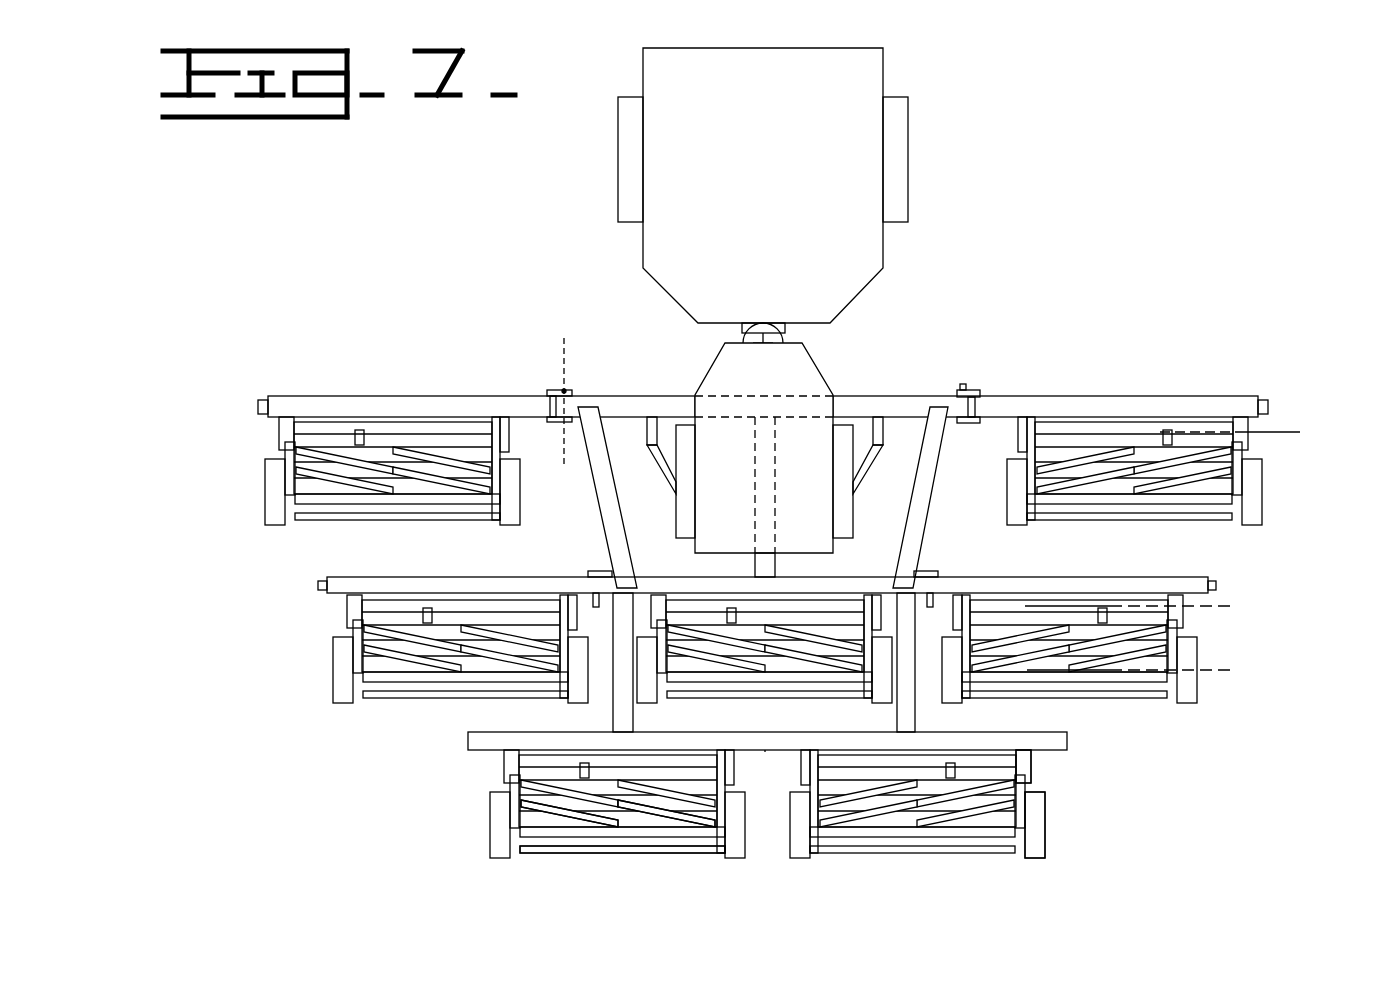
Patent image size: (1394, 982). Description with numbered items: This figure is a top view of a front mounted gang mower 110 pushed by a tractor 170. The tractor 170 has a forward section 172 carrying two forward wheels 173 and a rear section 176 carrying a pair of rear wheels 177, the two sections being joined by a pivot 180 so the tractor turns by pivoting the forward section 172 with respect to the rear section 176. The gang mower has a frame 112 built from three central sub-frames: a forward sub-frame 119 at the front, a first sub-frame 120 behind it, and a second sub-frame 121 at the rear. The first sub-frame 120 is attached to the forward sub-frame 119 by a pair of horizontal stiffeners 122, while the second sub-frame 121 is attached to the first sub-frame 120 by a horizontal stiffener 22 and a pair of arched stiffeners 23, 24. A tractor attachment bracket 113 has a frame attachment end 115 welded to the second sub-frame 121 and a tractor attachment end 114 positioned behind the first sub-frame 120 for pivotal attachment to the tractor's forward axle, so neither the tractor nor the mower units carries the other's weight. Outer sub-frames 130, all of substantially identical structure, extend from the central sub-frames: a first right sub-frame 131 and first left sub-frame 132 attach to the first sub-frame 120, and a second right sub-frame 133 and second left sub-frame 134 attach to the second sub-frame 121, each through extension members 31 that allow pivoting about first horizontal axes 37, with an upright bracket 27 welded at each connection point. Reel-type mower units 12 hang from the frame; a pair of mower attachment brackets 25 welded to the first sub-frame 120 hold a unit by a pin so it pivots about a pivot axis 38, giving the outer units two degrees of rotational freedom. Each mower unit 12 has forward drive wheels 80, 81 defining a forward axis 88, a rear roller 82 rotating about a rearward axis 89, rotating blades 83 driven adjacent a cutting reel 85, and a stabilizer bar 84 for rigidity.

The tractor 170 is at (790, 185).
The rear section 176 is at (643, 237).
The rear wheels 177 is at (908, 157).
The pivot 180 is at (785, 330).
The forward section 172 is at (830, 390).
The forward wheels 173 is at (853, 500).
The second sub-frame 121 is at (627, 397).
The frame attachment end 115 is at (645, 437).
The tractor attachment end 114 is at (676, 492).
The tractor attachment bracket 113 is at (883, 436).
The gang mower 110 is at (815, 423).
The frame 112 is at (763, 369).
The outer sub-frames 130 is at (1110, 397).
The second right sub-frame 133 is at (1202, 397).
The second left sub-frame 134 is at (300, 397).
The first left sub-frame 132 is at (360, 578).
The first right sub-frame 131 is at (1170, 578).
The first horizontal axes 37 is at (563, 390).
The extension members 31 is at (980, 420).
The pivot axis 38 is at (1300, 432).
The horizontal stiffener 22 is at (753, 568).
The arched stiffener 23 is at (603, 537).
The arched stiffener 24 is at (923, 525).
The first sub-frame 120 is at (767, 570).
The upright bracket 27 is at (962, 580).
The horizontal stiffeners 122 is at (612, 722).
The rearward axis 89 is at (1232, 606).
The forward axis 88 is at (1232, 670).
The reel-type mower unit 12 is at (773, 817).
The rear roller 82 is at (510, 772).
The rotating blades 83 is at (548, 808).
The stabilizer bar 84 is at (590, 853).
The cutting reel 85 is at (655, 822).
The forward sub-frame 119 is at (772, 752).
The forward drive wheel 80 is at (790, 848).
The forward drive wheel 81 is at (1043, 835).
The mower attachment brackets 25 is at (1033, 762).